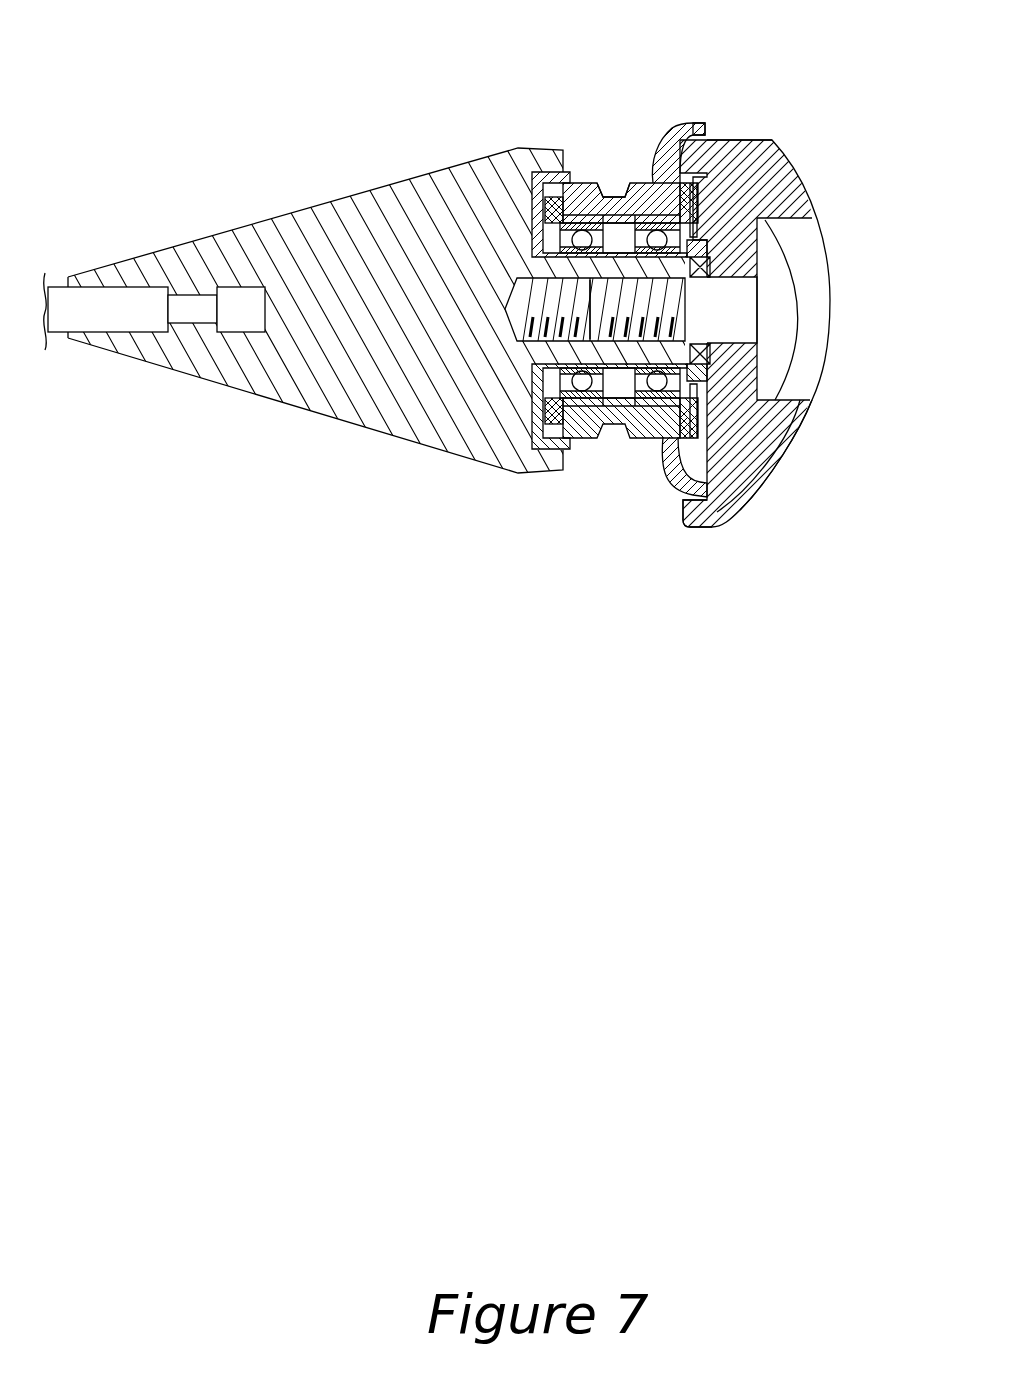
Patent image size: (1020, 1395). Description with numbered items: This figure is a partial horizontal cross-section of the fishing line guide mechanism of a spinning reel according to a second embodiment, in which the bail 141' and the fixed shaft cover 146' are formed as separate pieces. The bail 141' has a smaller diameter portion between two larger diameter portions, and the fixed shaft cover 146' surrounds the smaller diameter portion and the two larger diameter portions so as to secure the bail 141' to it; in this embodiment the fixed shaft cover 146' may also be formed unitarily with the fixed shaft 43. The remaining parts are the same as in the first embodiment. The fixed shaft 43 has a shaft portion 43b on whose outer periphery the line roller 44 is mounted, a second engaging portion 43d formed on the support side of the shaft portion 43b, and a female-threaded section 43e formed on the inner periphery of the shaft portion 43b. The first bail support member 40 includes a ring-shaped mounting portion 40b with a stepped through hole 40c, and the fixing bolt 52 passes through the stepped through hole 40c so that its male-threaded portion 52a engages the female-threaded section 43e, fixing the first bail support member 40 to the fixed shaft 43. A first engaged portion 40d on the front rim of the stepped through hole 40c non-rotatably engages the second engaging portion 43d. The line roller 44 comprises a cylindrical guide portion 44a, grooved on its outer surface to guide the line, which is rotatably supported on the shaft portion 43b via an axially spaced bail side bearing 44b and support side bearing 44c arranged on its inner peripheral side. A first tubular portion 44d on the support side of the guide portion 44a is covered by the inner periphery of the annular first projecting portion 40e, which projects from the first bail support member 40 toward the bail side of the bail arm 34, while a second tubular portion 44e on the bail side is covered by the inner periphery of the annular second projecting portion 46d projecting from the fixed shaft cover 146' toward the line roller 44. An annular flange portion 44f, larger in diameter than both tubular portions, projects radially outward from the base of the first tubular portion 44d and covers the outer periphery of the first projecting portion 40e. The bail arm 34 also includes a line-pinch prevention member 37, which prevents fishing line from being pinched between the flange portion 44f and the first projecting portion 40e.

The bail arm 34 is at (733, 527).
The line-pinch prevention member 37 is at (696, 515).
The first bail support member 40 is at (781, 472).
The ring-shaped mounting portion 40b is at (802, 433).
The stepped through hole 40c is at (800, 400).
The first engaged portion 40d is at (700, 345).
The first projecting portion 40e is at (698, 132).
The fixed shaft 43 is at (637, 345).
The shaft portion 43b is at (590, 320).
The second engaging portion 43d is at (783, 152).
The female-threaded section 43e is at (650, 440).
The line roller 44 is at (628, 183).
The cylindrical guide portion 44a is at (604, 195).
The bail side bearing 44b is at (578, 446).
The support side bearing 44c is at (738, 475).
The first tubular portion 44d is at (725, 138).
The second tubular portion 44e is at (575, 165).
The flange portion 44f is at (690, 122).
The second projecting portion 46d is at (548, 182).
The fixing bolt 52 is at (792, 305).
The male-threaded portion 52a is at (553, 452).
The bail 141' is at (154, 270).
The fixed shaft cover 146' is at (437, 275).